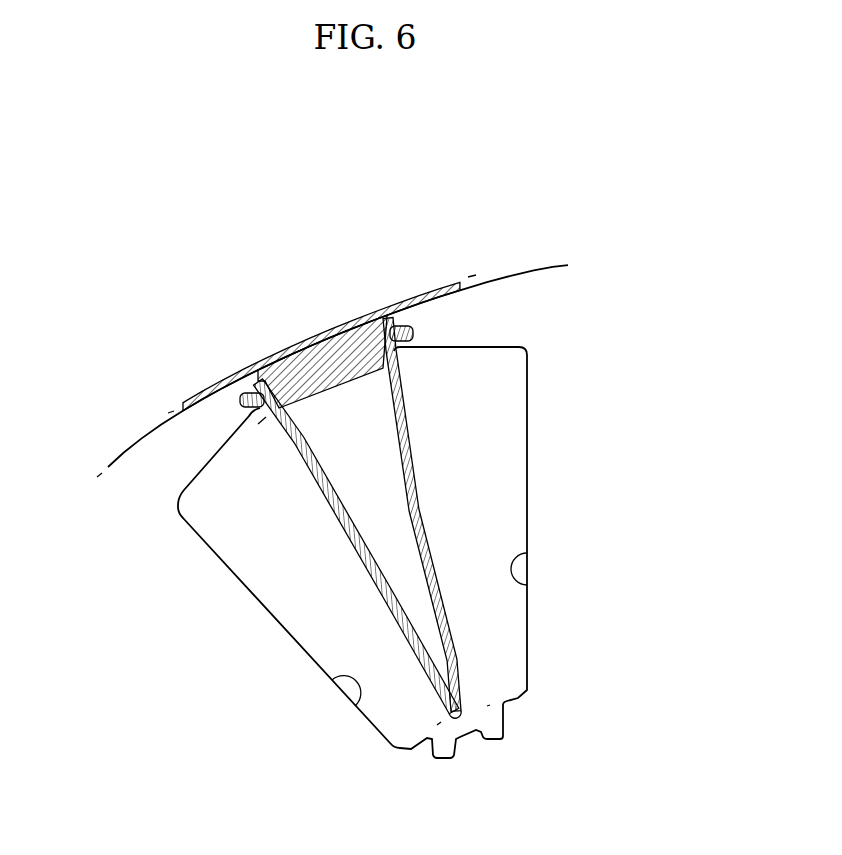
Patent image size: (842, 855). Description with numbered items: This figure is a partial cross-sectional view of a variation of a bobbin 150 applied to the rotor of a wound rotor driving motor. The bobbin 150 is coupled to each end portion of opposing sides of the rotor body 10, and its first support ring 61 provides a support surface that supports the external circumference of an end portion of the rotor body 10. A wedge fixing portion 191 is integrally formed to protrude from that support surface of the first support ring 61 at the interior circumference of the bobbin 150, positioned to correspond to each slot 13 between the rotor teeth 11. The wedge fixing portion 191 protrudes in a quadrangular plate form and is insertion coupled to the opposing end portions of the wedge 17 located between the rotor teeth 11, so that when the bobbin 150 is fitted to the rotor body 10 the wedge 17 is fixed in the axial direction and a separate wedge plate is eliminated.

The rotor body 10 is at (124, 430).
The rotor teeth 11 is at (543, 495).
The slot 13 is at (545, 590).
The wedge 17 is at (405, 442).
The first support ring 61 is at (207, 394).
The bobbin 150 is at (295, 304).
The wedge fixing portion 191 is at (350, 387).